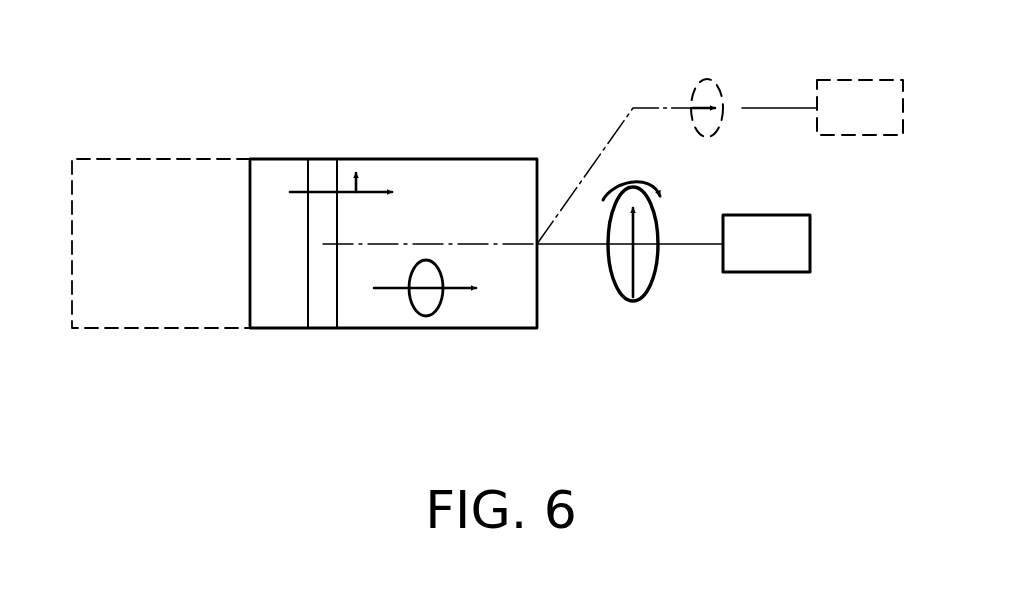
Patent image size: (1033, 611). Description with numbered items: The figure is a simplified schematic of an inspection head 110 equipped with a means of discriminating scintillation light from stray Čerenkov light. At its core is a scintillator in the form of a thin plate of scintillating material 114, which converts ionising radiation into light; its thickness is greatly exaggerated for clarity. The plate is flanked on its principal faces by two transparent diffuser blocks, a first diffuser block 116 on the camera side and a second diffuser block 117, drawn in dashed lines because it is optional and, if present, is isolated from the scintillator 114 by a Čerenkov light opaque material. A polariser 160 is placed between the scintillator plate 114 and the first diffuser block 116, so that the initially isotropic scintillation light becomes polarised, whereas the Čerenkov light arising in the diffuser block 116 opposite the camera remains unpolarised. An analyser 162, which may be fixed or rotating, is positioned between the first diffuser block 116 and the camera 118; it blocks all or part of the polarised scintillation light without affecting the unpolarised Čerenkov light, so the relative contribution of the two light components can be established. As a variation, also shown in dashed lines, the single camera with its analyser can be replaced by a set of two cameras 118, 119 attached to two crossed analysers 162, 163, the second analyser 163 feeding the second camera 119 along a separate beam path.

The inspection head 110 is at (243, 345).
The scintillating material plate 114 is at (277, 170).
The first diffuser block 116 is at (463, 322).
The second diffuser block 117 is at (106, 162).
The camera 118 is at (762, 222).
The second camera 119 is at (843, 80).
The polariser 160 is at (326, 322).
The analyser 162 is at (647, 282).
The second analyser 163 is at (696, 80).